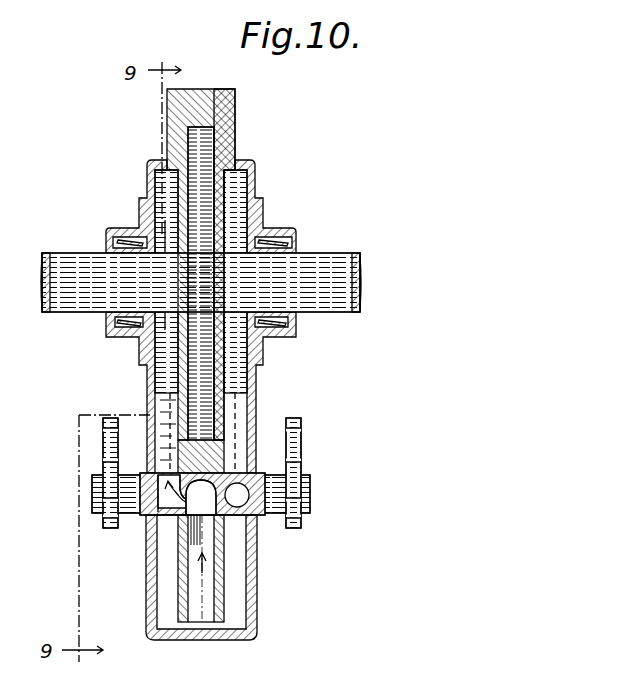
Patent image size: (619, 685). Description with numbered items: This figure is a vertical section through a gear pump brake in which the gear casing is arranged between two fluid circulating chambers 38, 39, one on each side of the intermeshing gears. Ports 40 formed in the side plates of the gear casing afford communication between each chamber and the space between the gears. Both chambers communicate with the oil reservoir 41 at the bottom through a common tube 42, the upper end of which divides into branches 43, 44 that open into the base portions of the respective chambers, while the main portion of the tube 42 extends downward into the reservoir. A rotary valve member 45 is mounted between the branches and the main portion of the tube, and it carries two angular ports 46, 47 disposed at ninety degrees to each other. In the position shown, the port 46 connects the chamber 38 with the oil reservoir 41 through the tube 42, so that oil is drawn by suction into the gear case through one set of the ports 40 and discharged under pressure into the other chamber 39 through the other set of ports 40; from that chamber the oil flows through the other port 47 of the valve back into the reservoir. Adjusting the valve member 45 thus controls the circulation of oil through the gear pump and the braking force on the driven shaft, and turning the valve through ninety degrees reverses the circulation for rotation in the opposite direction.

The fluid circulating chamber 38 is at (152, 186).
The fluid circulating chamber 39 is at (252, 183).
The ports 40 is at (150, 373).
The oil reservoir 41 is at (237, 625).
The common tube 42 is at (204, 582).
The branch 43 is at (170, 428).
The branch 44 is at (240, 422).
The rotary valve member 45 is at (273, 493).
The angular port 46 is at (167, 507).
The angular port 47 is at (240, 500).